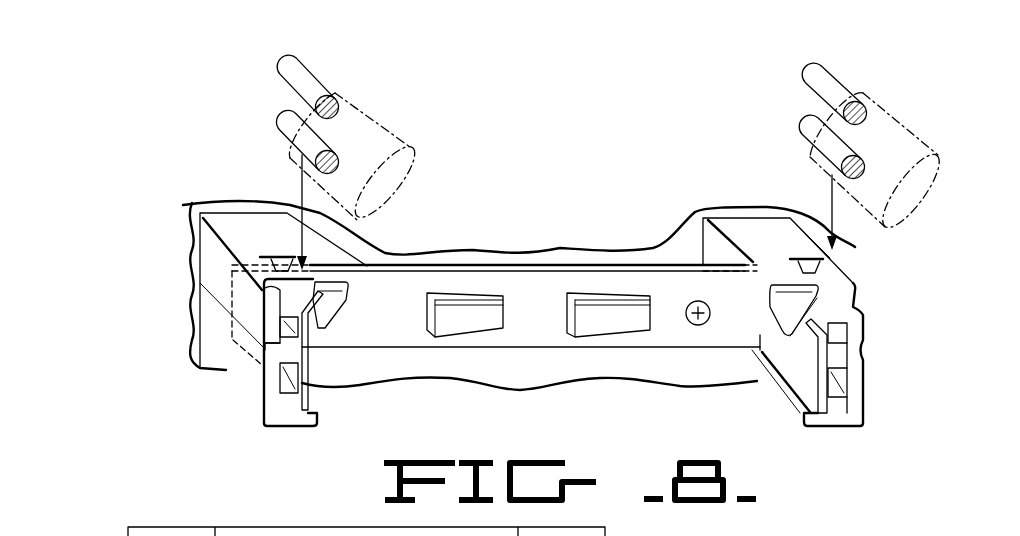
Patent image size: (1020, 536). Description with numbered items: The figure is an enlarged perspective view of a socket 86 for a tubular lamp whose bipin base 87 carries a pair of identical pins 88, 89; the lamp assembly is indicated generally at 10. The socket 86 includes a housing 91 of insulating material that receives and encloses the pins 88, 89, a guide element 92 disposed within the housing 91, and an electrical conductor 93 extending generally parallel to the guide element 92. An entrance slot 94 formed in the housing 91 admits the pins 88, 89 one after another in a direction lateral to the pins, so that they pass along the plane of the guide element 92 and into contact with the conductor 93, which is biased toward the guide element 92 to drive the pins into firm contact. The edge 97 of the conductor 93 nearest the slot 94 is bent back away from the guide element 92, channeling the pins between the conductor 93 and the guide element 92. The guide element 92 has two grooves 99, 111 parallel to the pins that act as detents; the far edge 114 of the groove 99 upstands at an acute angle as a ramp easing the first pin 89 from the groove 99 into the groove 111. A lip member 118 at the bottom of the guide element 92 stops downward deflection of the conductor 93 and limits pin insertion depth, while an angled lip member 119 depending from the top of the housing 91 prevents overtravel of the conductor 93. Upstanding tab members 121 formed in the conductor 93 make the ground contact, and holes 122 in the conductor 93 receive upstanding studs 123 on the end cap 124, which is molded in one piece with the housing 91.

The electrical connector assembly 10 is at (484, 307).
The socket 86 is at (241, 190).
The bipin base 87 is at (372, 100).
The pin 88 is at (293, 66).
The pin 89 is at (283, 121).
The housing 91 is at (223, 220).
The guide element 92 is at (266, 389).
The electrical conductor 93 is at (310, 395).
The entrance slot 94 is at (303, 262).
The edge of the conductor 97 is at (287, 283).
The groove 99 is at (262, 352).
The groove 111 is at (280, 390).
The edge of the groove 114 is at (305, 348).
The lip member 118 is at (313, 427).
The angled lip member 119 is at (334, 318).
The upstanding tab member 121 is at (466, 310).
The hole 122 is at (690, 306).
The upstanding stud 123 is at (705, 324).
The end cap 124 is at (563, 378).